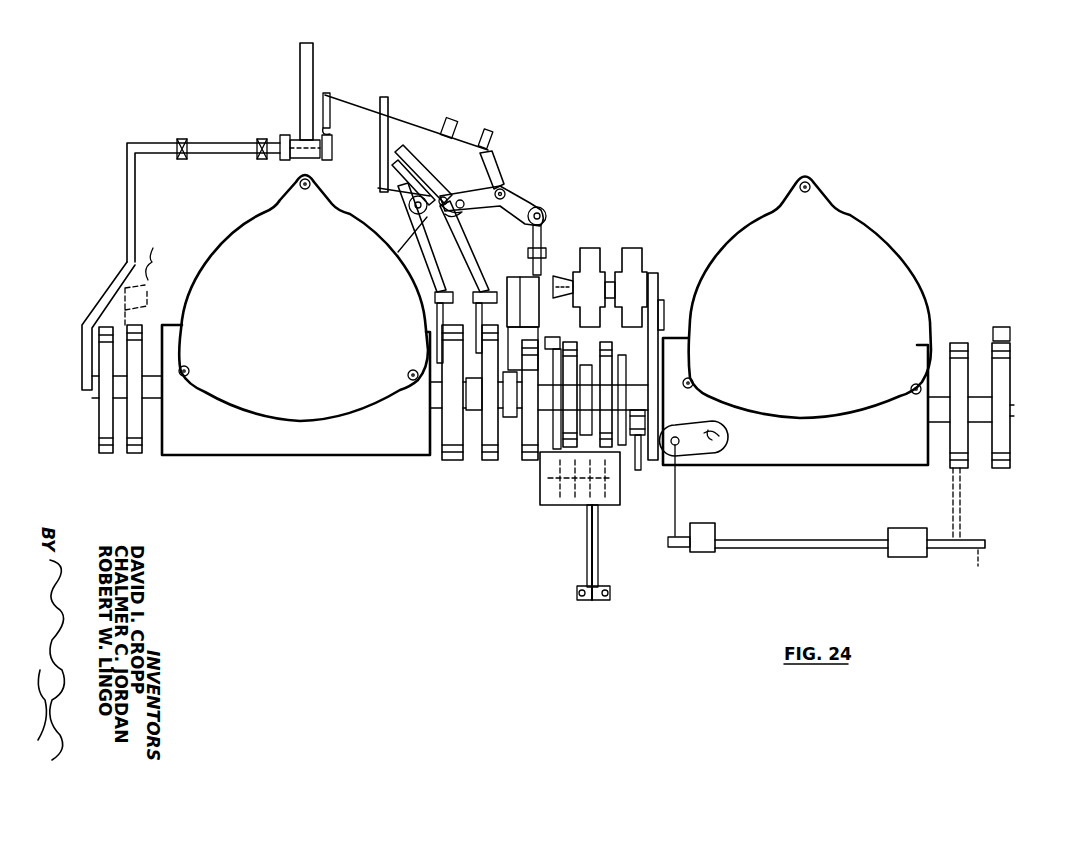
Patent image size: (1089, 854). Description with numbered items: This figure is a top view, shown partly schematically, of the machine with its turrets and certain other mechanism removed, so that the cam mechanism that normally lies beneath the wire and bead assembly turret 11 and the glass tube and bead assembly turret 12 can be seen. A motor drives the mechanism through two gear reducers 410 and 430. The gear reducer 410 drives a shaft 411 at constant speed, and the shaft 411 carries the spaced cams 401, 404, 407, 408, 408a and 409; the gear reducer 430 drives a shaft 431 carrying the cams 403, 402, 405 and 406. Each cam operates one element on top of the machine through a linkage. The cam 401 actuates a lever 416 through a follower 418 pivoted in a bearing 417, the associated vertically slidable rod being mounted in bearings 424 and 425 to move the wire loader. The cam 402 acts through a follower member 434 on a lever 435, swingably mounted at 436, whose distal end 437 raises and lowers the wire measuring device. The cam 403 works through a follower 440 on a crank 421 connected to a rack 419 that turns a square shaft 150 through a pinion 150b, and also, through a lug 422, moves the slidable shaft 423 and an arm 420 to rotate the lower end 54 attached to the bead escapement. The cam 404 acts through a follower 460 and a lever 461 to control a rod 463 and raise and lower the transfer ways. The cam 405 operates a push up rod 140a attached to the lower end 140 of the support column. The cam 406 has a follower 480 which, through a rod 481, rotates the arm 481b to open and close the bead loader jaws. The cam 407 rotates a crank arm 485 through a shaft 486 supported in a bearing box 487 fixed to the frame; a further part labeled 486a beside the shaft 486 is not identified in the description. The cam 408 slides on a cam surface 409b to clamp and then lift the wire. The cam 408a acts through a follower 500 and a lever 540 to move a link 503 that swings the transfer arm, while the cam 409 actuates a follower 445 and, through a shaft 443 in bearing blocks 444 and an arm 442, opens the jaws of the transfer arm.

The wire and bead assembly turret 11 is at (906, 268).
The glass tube and bead assembly turret 12 is at (290, 415).
The lower end of cam lever 54 is at (333, 126).
The lower end of support column 140 is at (158, 255).
The push up rod 140a is at (155, 306).
The square shaft 150 is at (392, 185).
The pinion 150b is at (391, 242).
The cam 401 is at (440, 459).
The cam 402 is at (485, 459).
The cam 403 is at (528, 459).
The cam 404 is at (549, 456).
The cam 405 is at (131, 448).
The cam 406 is at (106, 438).
The cam 407 is at (952, 469).
The cam 408 is at (1003, 470).
The cam 408a is at (606, 505).
The cam 409 is at (653, 340).
The cam surface 409b is at (1012, 334).
The gear reducer 410 is at (834, 464).
The shaft 411 is at (982, 406).
The lever 416 is at (397, 200).
The bearing 417 is at (422, 237).
The follower 418 is at (450, 356).
The rack 419 is at (434, 164).
The arm 420 is at (330, 116).
The crank 421 is at (515, 197).
The lug 422 is at (494, 150).
The slidable shaft 423 is at (415, 122).
The bearings 424 is at (456, 125).
The bearings 425 is at (489, 146).
The gear reducer 430 is at (334, 456).
The shaft 431 is at (118, 386).
The follower member 434 is at (488, 350).
The lever 435 is at (448, 236).
The swing mounting 436 is at (484, 291).
The distal end of lever 437 is at (422, 214).
The follower 440 is at (520, 290).
The arm 442 is at (558, 282).
The shaft 443 is at (610, 282).
The bearing blocks 444 is at (586, 263).
The follower 445 is at (655, 301).
The follower 460 is at (550, 392).
The lever 461 is at (566, 372).
The rod 463 is at (553, 337).
The follower 480 is at (90, 352).
The rod 481 is at (127, 170).
The arm 481b is at (383, 97).
The crank arm 485 is at (690, 452).
The shaft 486 is at (806, 549).
The rod extension 486a is at (961, 516).
The bearing box 487 is at (710, 553).
The follower 500 is at (606, 358).
The link 503 is at (600, 601).
The lever 540 is at (586, 572).